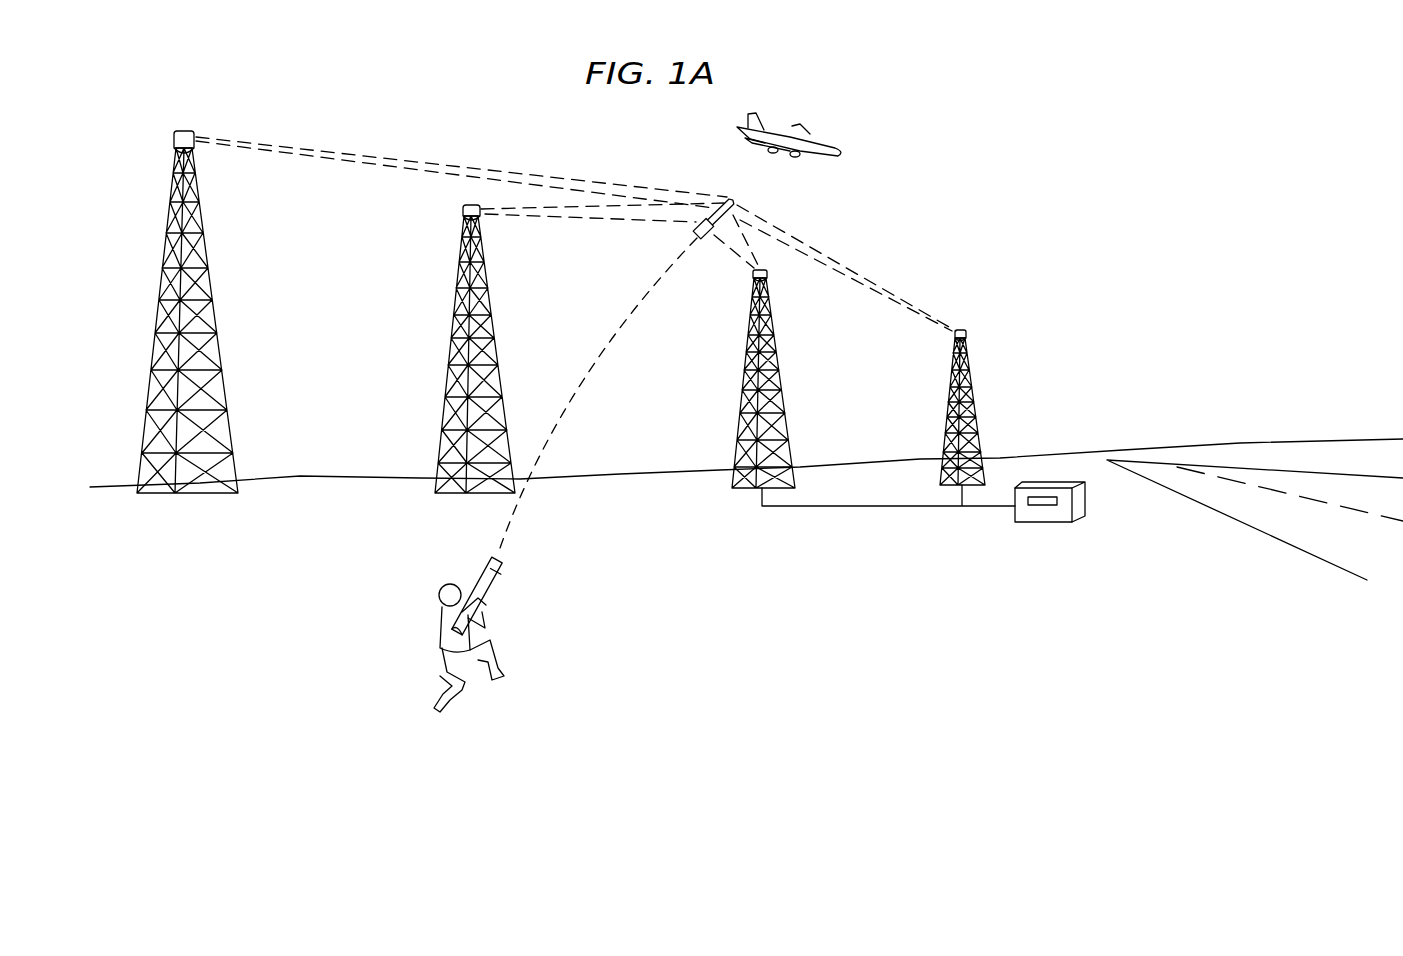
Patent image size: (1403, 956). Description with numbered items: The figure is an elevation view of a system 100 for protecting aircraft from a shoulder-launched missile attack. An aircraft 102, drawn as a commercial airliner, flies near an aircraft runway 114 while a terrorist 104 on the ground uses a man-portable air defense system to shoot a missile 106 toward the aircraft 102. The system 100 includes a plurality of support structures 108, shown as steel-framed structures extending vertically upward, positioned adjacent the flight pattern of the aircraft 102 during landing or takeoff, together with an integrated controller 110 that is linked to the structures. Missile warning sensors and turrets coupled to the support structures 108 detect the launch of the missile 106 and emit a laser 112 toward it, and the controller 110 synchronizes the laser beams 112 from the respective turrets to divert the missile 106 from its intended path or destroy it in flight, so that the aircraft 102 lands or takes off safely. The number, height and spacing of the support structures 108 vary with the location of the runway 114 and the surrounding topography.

The system 100 is at (1014, 114).
The aircraft 102 is at (822, 137).
The terrorist 104 is at (442, 635).
The missile 106 is at (710, 241).
The support structures 108 is at (157, 292).
The integrated controller 110 is at (1080, 506).
The laser 112 is at (549, 180).
The aircraft runway 114 is at (1268, 470).